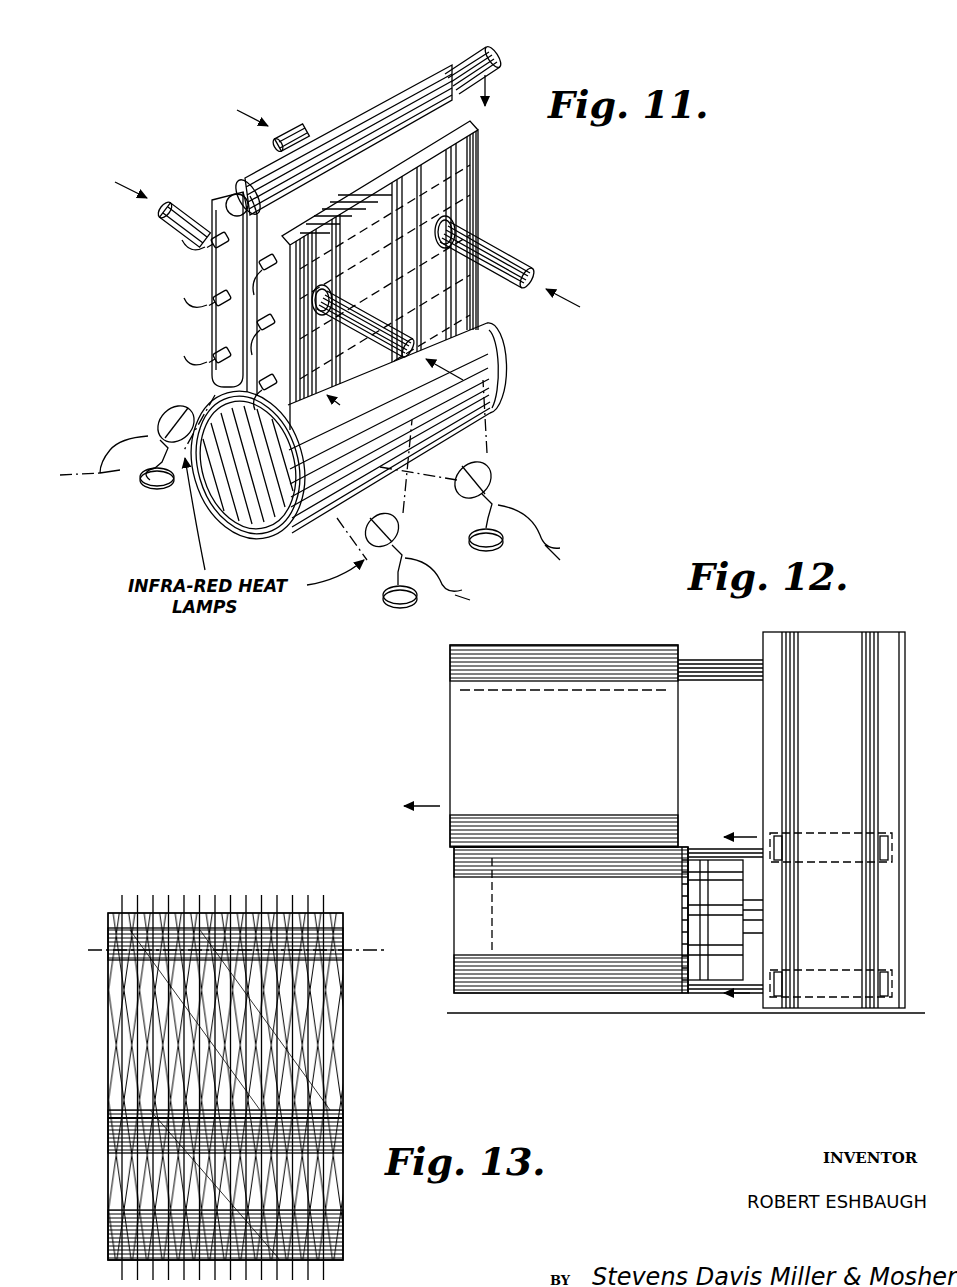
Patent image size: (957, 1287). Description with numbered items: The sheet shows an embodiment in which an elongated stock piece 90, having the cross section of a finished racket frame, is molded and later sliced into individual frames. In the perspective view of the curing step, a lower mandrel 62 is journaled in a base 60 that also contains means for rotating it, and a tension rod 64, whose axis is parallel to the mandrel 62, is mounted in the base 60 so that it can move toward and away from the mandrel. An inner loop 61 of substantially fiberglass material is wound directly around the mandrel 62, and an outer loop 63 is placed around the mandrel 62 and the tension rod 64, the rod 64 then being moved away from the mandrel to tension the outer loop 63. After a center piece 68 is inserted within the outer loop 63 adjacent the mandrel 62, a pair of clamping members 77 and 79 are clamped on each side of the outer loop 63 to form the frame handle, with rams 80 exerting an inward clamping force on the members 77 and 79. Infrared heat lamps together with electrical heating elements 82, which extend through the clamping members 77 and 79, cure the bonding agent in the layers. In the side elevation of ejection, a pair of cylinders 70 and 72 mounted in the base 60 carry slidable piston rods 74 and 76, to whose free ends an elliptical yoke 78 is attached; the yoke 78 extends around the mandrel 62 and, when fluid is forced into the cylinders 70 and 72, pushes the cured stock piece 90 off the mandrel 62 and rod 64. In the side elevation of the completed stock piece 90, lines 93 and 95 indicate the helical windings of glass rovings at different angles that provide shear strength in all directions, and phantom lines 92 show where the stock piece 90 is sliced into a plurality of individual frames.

In FIG. 12, the base 60 is at (838, 650).
In FIG. 11, the inner loop 61 is at (285, 522).
In FIG. 11, the lower mandrel 62 is at (248, 508).
In FIG. 12, the lower mandrel 62 is at (512, 901).
In FIG. 11, the outer loop 63 is at (335, 508).
In FIG. 11, the tension rod 64 is at (453, 68).
In FIG. 12, the tension rod 64 is at (716, 666).
In FIG. 11, the center piece 68 is at (248, 312).
In FIG. 12, the cylinder 70 is at (846, 833).
In FIG. 12, the cylinder 72 is at (838, 997).
In FIG. 12, the piston rod 74 is at (702, 846).
In FIG. 12, the piston rod 76 is at (703, 1000).
In FIG. 11, the clamping member 77 is at (212, 265).
In FIG. 12, the elliptical yoke 78 is at (684, 996).
In FIG. 11, the clamping member 79 is at (470, 176).
In FIG. 11, the rams 80 is at (183, 212).
In FIG. 11, the electrical heating elements 82 is at (218, 358).
In FIG. 12, the stock piece 90 is at (465, 733).
In FIG. 13, the stock piece 90 is at (348, 1072).
In FIG. 13, the cutting lines 92 is at (263, 897).
In FIG. 13, the helical winding 93 is at (328, 1032).
In FIG. 13, the helical winding 95 is at (345, 1101).